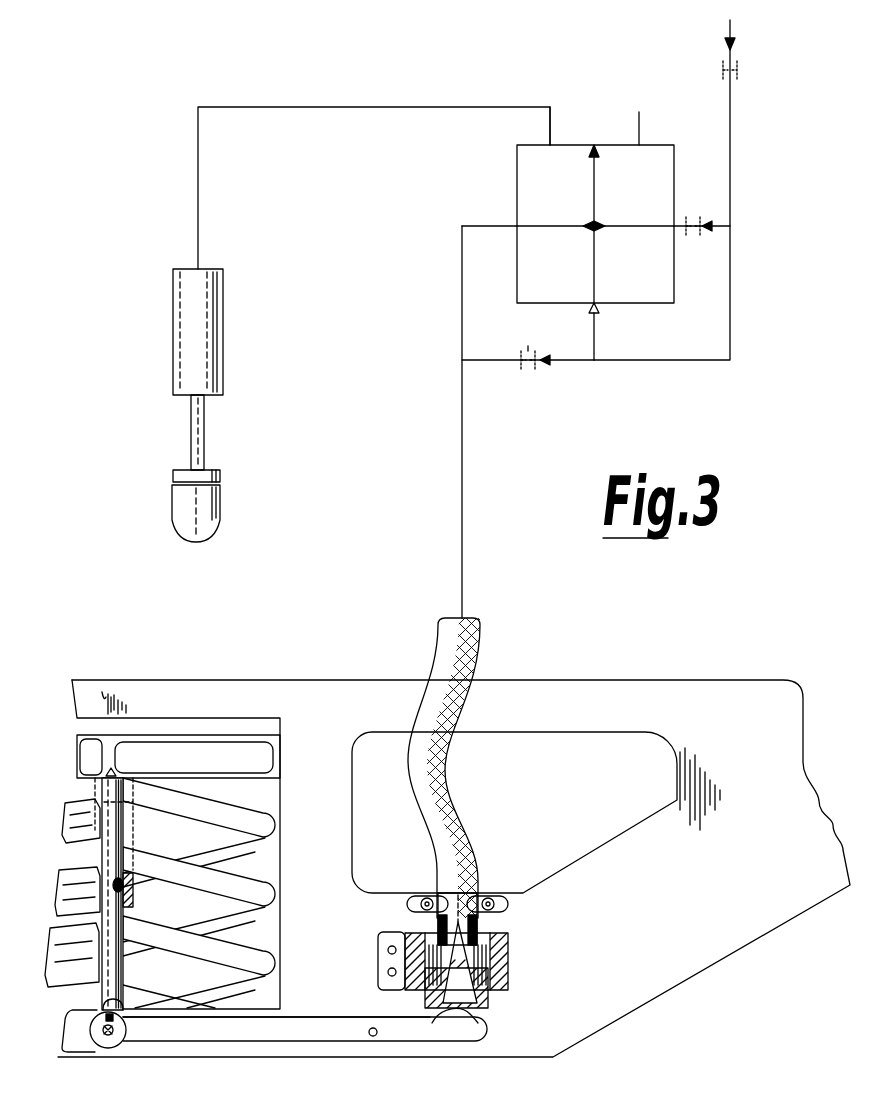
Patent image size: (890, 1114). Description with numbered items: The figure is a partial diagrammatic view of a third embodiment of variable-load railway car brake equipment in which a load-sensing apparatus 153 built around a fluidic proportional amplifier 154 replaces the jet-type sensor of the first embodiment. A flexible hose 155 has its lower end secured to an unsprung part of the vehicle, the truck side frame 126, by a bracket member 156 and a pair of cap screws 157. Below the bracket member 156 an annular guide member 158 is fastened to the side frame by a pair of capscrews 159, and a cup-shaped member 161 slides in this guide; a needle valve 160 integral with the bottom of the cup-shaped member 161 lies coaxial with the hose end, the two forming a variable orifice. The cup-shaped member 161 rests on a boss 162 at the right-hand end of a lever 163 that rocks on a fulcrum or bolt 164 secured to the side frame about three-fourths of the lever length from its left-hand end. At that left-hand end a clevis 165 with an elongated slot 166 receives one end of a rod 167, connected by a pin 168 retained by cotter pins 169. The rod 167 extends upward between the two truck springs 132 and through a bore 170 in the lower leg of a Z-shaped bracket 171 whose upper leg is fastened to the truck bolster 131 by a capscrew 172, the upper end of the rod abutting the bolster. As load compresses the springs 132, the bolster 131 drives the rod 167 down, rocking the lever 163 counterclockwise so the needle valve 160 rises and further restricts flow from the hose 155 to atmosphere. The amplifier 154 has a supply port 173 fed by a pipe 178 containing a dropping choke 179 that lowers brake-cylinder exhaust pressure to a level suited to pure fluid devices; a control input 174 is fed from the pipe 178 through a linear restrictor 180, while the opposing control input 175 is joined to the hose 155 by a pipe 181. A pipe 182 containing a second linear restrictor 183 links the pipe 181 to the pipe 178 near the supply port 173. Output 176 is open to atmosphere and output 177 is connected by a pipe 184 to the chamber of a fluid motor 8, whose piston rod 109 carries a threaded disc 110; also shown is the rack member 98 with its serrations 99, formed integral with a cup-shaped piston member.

The fluid motor 8 is at (223, 301).
The rack member 98 is at (190, 510).
The serrations 99 is at (218, 504).
The piston rod 109 is at (205, 455).
The disc 110 is at (183, 470).
The truck side frame 126 is at (620, 732).
The truck bolster 131 is at (105, 755).
The truck springs 132 is at (262, 897).
The load-sensing apparatus 153 is at (281, 657).
The fluidic proportional amplifier 154 is at (572, 132).
The flexible hose 155 is at (425, 792).
The bracket member 156 is at (480, 893).
The cap screws 157 is at (415, 906).
The annular guide member 158 is at (508, 942).
The capscrews 159 is at (378, 954).
The needle valve 160 is at (495, 978).
The cup-shaped member 161 is at (425, 1000).
The boss 162 is at (472, 1015).
The lever 163 is at (273, 1043).
The fulcrum or bolt 164 is at (373, 1038).
The clevis 165 is at (110, 1050).
The elongated slot 166 is at (115, 1040).
The rod 167 is at (112, 825).
The pin 168 is at (96, 1045).
The cotter pins 169 is at (105, 1015).
The bore 170 is at (124, 893).
The Z-shaped bracket 171 is at (96, 862).
The capscrew 172 is at (100, 803).
The supply port 173 is at (598, 309).
The control input 174 is at (677, 227).
The control input 175 is at (516, 223).
The output 176 is at (645, 137).
The output 177 is at (548, 141).
The pipe 178 is at (732, 33).
The dropping choke 179 is at (738, 71).
The linear restrictor 180 is at (693, 233).
The pipe 181 is at (456, 373).
The pipe 182 is at (548, 365).
The second linear restrictor 183 is at (528, 351).
The pipe 184 is at (446, 107).